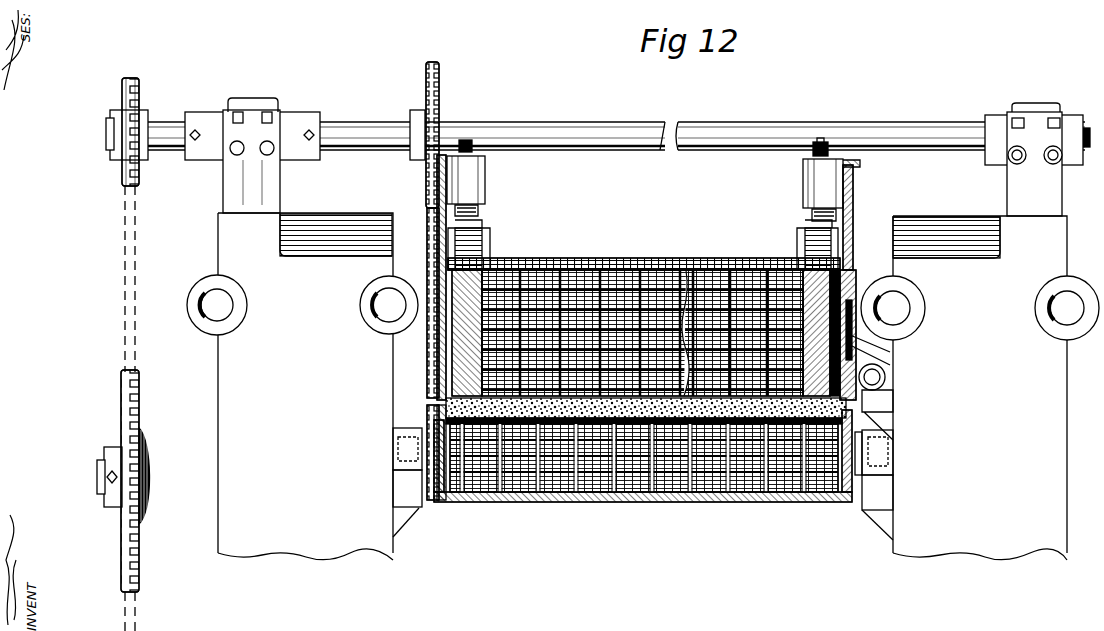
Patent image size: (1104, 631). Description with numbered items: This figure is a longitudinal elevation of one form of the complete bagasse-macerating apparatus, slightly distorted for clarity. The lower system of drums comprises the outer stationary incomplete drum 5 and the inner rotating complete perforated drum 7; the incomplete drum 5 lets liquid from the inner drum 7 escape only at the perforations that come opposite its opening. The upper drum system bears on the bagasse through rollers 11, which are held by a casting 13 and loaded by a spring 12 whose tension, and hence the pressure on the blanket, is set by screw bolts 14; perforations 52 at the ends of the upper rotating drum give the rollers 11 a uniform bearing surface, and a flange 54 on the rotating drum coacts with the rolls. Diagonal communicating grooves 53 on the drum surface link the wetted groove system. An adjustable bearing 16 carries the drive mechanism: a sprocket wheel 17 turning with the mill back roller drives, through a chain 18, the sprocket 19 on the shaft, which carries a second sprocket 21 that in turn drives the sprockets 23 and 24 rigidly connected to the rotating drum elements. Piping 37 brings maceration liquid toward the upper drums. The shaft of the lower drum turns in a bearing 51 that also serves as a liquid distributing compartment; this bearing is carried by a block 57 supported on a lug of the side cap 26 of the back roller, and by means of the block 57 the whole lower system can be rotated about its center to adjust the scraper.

The outer stationary incomplete drum 5 is at (582, 500).
The inner rotating complete perforated drum 7 is at (508, 500).
The rollers 11 is at (475, 252).
The spring 12 is at (478, 212).
The casting 13 is at (486, 182).
The screw bolts 14 is at (470, 140).
The adjustable bearing 16 is at (634, 157).
The sprocket wheel 17 is at (124, 400).
The chain 18 is at (128, 278).
The sprocket 19 is at (125, 92).
The second sprocket 21 is at (440, 85).
The sprocket 23 is at (430, 258).
The sprocket 24 is at (428, 418).
The side cap 26 is at (643, 386).
The piping 37 is at (880, 378).
The bearing 51 is at (878, 471).
The perforations 52 is at (855, 300).
The diagonal communicating grooves 53 is at (438, 340).
The flange 54 is at (850, 268).
The block 57 is at (405, 483).